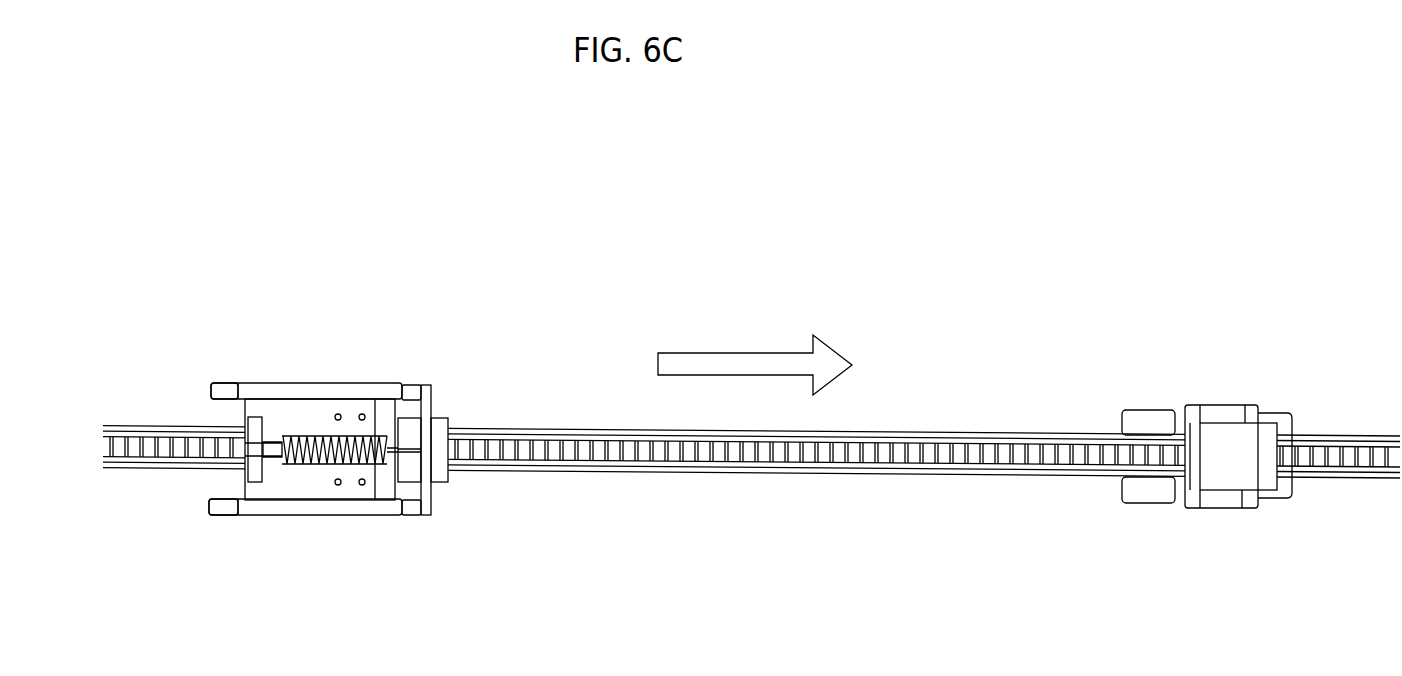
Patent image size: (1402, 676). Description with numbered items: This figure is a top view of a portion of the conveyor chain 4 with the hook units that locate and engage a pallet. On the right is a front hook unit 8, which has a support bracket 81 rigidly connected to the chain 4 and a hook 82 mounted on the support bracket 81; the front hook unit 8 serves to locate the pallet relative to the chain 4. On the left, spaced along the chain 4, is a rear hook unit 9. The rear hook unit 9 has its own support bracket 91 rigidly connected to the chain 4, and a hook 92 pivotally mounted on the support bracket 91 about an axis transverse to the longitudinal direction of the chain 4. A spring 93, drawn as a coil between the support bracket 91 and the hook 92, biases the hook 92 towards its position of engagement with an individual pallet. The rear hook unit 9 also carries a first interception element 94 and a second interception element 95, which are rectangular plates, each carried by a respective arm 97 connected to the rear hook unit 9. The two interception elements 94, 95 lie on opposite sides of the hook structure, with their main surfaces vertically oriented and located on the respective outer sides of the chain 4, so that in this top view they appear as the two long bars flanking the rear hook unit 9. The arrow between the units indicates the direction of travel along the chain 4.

The chain 4 is at (698, 477).
The front hook unit 8 is at (1222, 371).
The support bracket 81 is at (1278, 408).
The hook 82 is at (1227, 478).
The rear hook unit 9 is at (344, 334).
The support bracket 91 is at (280, 410).
The hook 92 is at (405, 473).
The spring 93 is at (367, 437).
The first interception element 94 is at (208, 503).
The second interception element 95 is at (210, 388).
The arm 97 is at (248, 384).